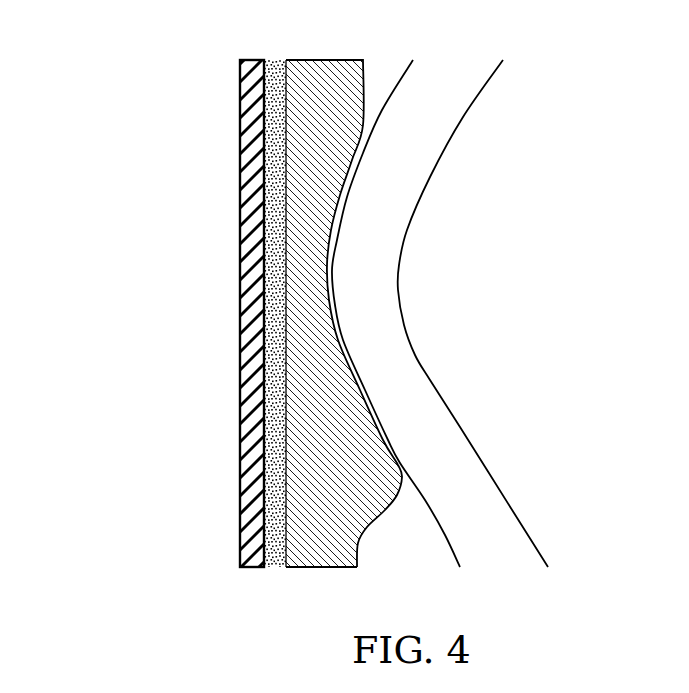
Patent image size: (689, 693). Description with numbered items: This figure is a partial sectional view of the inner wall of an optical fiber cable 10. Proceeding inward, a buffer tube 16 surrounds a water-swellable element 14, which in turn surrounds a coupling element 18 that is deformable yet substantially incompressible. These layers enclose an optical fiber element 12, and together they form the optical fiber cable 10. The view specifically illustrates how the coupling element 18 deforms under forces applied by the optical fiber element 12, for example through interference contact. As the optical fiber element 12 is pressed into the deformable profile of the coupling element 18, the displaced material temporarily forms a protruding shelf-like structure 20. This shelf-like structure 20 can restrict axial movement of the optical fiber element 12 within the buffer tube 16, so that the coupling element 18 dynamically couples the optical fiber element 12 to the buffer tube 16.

The optical fiber cable 10 is at (288, 343).
The optical fiber element 12 is at (412, 168).
The water-swellable element 14 is at (267, 246).
The buffer tube 16 is at (247, 160).
The coupling element 18 is at (305, 333).
The protruding shelf-like structure 20 is at (382, 472).